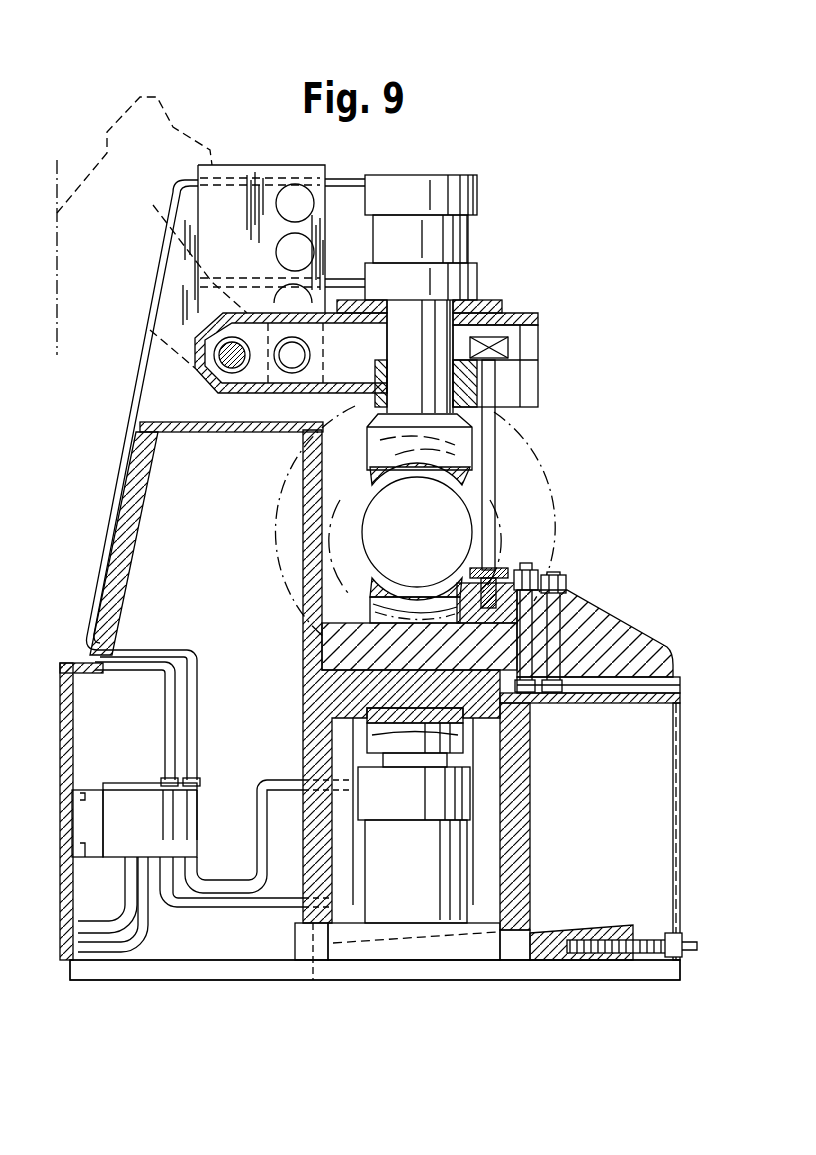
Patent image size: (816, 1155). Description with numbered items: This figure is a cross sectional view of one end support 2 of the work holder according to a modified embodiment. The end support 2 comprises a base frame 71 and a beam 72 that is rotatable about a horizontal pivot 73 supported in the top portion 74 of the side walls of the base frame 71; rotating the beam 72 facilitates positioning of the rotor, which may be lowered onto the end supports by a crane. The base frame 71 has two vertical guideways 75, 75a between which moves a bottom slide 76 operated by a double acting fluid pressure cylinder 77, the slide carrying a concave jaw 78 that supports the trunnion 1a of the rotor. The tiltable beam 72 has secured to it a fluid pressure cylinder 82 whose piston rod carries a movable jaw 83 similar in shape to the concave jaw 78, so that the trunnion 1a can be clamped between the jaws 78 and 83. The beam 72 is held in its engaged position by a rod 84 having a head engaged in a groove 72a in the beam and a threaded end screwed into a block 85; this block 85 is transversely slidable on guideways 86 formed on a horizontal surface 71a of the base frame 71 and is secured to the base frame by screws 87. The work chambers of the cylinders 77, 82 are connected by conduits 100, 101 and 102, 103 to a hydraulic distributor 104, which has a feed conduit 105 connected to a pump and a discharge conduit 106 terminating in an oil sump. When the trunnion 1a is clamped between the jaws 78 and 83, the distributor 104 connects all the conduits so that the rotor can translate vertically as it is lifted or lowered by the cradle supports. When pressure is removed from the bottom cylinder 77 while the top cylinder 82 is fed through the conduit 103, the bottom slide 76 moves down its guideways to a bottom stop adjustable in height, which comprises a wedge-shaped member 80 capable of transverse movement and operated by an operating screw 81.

The end support 2 is at (108, 462).
The top portion 74 is at (233, 190).
The fluid pressure cylinder 82 is at (445, 197).
The beam 72 is at (247, 315).
The groove 72a is at (517, 340).
The horizontal pivot 73 is at (233, 390).
The rod 84 is at (490, 400).
The movable jaw 83 is at (372, 470).
The trunnion 1a is at (465, 518).
The base frame 71 is at (130, 522).
The concave jaw 78 is at (370, 608).
The bottom slide 76 is at (305, 657).
The vertical guideway 75 is at (307, 763).
The vertical guideway 75a is at (522, 807).
The double acting fluid pressure cylinder 77 is at (433, 870).
The screws 87 is at (560, 622).
The block 85 is at (630, 646).
The guideways 86 is at (667, 688).
The horizontal surface 71a is at (643, 707).
The operating screw 81 is at (650, 933).
The wedge-shaped member 80 is at (537, 960).
The hydraulic distributor 104 is at (123, 807).
The conduit 103 is at (145, 667).
The conduit 102 is at (193, 702).
The conduit 101 is at (256, 842).
The conduit 100 is at (265, 902).
The feed conduit 105 is at (105, 914).
The discharge conduit 106 is at (135, 925).